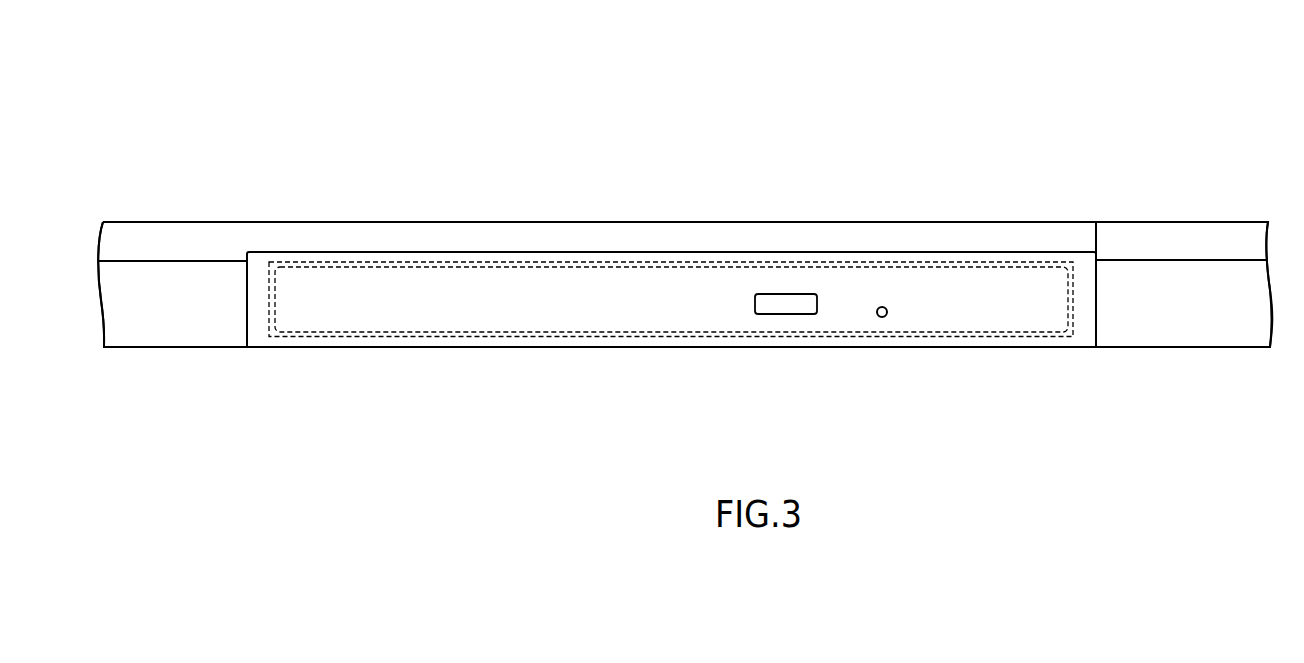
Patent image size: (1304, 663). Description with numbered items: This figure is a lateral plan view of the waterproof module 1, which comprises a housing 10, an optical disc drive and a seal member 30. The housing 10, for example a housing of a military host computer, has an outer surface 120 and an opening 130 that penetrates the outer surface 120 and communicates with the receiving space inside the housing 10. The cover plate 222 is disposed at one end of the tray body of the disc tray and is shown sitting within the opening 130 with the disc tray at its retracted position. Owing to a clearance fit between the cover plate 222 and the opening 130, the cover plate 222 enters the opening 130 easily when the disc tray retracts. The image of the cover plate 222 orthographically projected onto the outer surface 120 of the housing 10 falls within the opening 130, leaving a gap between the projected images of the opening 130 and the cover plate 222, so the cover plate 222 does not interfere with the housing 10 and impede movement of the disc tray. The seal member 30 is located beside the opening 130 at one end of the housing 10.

The waterproof module 1 is at (1058, 57).
The housing 10 is at (685, 222).
The outer surface 120 is at (196, 304).
The opening 130 is at (1071, 250).
The seal member 30 is at (1084, 270).
The cover plate 222 is at (923, 297).